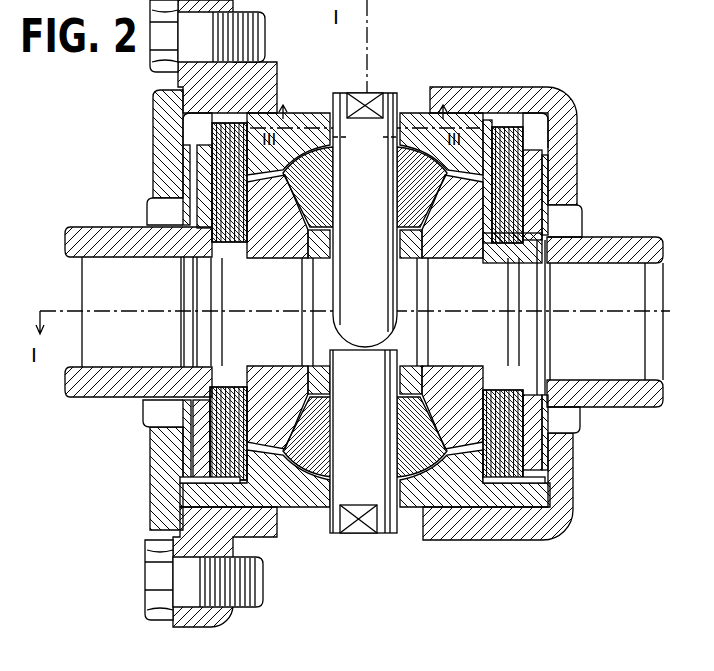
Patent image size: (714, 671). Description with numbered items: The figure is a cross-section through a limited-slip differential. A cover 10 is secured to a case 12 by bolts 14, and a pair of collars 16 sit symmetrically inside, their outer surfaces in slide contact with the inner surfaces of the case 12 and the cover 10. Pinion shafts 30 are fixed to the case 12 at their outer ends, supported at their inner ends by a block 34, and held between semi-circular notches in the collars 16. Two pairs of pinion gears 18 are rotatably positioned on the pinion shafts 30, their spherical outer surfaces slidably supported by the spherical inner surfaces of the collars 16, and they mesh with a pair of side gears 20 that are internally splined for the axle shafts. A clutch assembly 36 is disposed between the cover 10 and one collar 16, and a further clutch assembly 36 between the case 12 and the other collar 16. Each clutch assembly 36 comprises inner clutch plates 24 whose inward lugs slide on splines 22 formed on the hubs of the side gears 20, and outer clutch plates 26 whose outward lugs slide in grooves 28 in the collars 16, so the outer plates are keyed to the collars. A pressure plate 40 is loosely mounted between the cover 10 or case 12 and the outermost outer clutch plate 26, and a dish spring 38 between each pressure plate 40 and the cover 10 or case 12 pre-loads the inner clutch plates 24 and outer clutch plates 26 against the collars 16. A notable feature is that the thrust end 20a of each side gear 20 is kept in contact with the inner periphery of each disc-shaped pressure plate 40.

The cover 10 is at (170, 166).
The case 12 is at (535, 101).
The bolts 14 is at (265, 48).
The collars 16 is at (298, 497).
The pinion gears 18 is at (428, 178).
The side gears 20 is at (273, 242).
The thrust end 20a is at (208, 372).
The splines 22 is at (212, 240).
The inner clutch plates 24 is at (238, 246).
The outer clutch plates 26 is at (232, 388).
The grooves 28 is at (192, 128).
The pinion shafts 30 is at (360, 304).
The block 34 is at (405, 362).
The clutch assembly 36 is at (221, 490).
The dish spring 38 is at (180, 445).
The pressure plate 40 is at (200, 458).